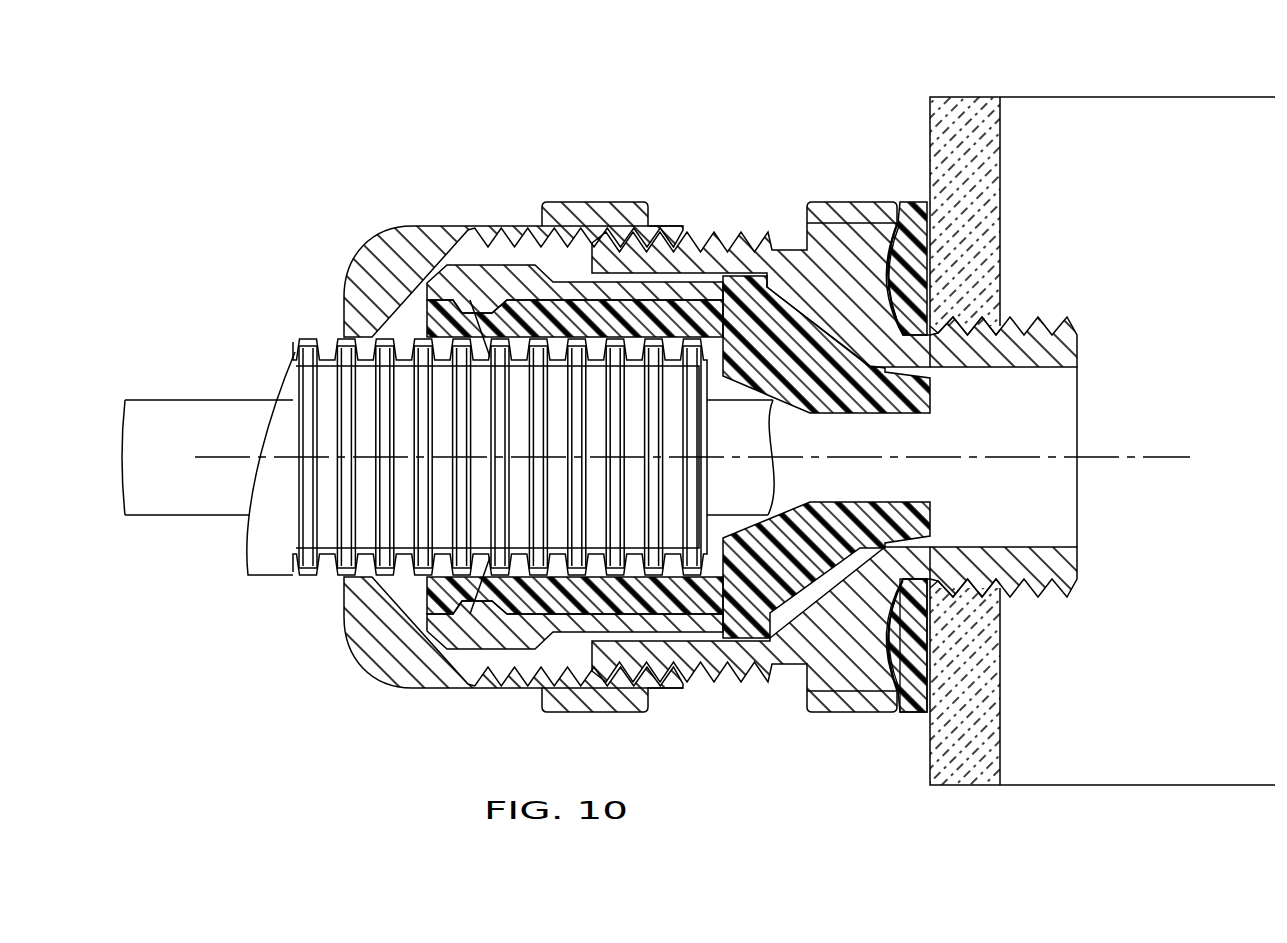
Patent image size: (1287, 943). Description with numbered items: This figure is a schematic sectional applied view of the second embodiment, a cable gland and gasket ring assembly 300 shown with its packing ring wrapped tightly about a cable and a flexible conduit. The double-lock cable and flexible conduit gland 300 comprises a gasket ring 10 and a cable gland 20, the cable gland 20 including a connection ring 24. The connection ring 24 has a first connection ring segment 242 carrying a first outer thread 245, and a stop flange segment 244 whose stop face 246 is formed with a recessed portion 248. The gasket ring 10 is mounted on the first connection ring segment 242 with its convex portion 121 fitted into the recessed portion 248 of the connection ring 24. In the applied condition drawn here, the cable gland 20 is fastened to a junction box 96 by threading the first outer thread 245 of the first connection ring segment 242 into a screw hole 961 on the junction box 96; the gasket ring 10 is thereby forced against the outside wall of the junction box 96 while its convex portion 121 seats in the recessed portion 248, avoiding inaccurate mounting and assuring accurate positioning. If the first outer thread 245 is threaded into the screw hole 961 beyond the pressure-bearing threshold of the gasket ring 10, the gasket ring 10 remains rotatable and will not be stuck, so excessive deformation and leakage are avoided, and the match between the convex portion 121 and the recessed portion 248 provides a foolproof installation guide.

The cable gland and gasket ring assembly 300 is at (305, 172).
The cable gland 20 is at (492, 200).
The connection ring 24 is at (843, 192).
The recessed portion 248 is at (880, 280).
The convex portion 121 is at (903, 197).
The gasket ring 10 is at (915, 200).
The junction box 96 is at (1045, 97).
The screw hole 961 is at (943, 305).
The first outer thread 245 is at (1042, 320).
The first connection ring segment 242 is at (917, 627).
The stop flange segment 244 is at (813, 672).
The stop face 246 is at (883, 620).